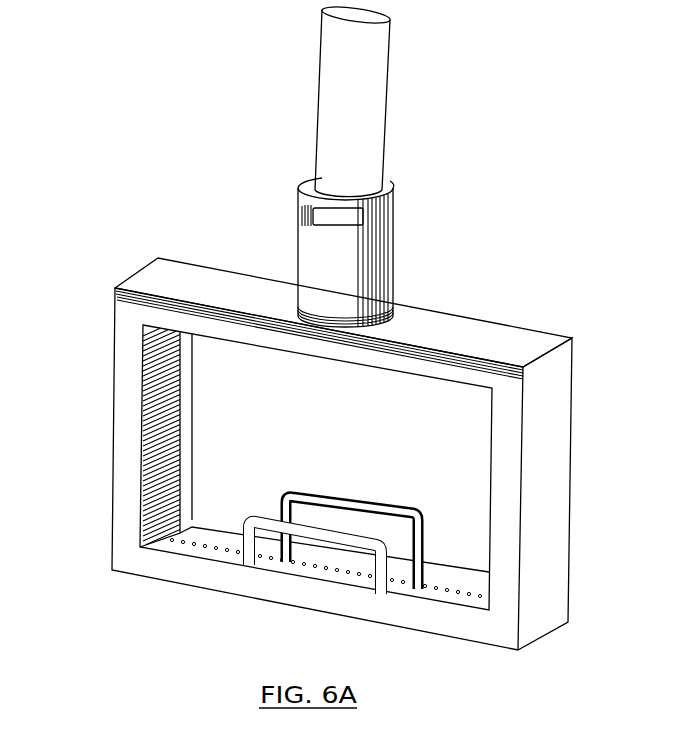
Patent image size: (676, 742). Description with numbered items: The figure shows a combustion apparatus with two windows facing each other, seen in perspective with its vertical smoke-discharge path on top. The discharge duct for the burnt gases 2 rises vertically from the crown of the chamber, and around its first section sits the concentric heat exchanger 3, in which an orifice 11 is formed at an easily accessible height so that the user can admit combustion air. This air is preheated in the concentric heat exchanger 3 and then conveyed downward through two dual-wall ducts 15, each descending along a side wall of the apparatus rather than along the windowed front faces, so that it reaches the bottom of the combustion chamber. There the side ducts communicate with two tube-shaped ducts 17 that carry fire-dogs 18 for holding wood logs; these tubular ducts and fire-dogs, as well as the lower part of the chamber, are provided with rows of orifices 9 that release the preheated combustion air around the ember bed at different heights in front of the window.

The discharge duct for the burnt gases 2 is at (362, 155).
The concentric heat exchanger 3 is at (385, 287).
The orifice 11 is at (317, 213).
The dual-wall ducts 15 is at (120, 440).
The orifices 9 is at (131, 506).
The tube-shaped ducts 17 is at (207, 543).
The fire-dogs 18 is at (368, 503).